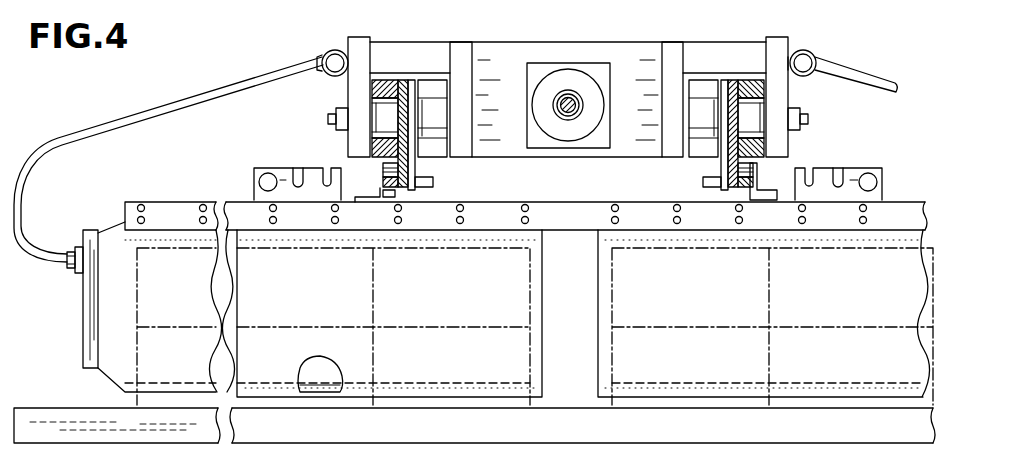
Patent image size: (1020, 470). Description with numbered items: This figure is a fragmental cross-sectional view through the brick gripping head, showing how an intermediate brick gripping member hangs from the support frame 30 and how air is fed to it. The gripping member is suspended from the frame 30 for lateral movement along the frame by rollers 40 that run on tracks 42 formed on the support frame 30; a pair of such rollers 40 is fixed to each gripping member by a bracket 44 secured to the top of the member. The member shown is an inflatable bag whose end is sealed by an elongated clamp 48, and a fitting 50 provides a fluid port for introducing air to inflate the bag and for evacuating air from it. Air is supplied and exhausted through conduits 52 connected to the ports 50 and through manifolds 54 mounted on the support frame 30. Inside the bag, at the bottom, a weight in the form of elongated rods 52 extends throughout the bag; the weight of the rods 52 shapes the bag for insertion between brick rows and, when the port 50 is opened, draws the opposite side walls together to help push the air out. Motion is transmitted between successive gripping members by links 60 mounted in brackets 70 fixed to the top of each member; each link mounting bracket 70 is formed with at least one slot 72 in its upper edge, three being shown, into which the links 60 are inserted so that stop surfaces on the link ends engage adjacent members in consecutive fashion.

The support frame 30 is at (777, 42).
The rollers 40 is at (386, 170).
The tracks 42 is at (396, 191).
The bracket 44 is at (758, 195).
The elongated clamp 48 is at (88, 346).
The fitting 50 is at (75, 273).
The conduits 52 is at (219, 88).
The manifolds 54 is at (327, 52).
The links 60 is at (261, 183).
The link mounting brackets 70 is at (258, 170).
The slot 72 is at (268, 168).